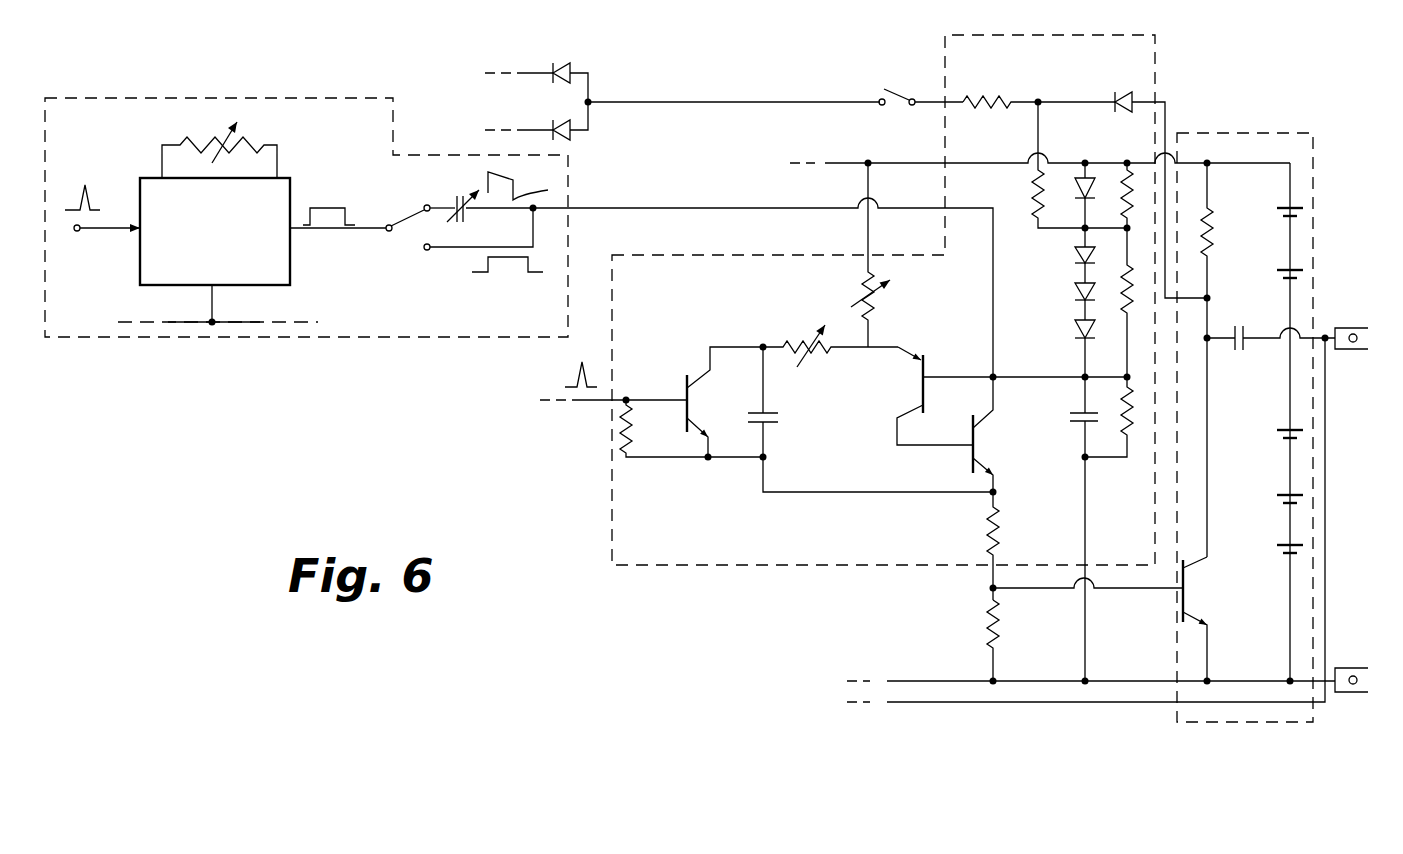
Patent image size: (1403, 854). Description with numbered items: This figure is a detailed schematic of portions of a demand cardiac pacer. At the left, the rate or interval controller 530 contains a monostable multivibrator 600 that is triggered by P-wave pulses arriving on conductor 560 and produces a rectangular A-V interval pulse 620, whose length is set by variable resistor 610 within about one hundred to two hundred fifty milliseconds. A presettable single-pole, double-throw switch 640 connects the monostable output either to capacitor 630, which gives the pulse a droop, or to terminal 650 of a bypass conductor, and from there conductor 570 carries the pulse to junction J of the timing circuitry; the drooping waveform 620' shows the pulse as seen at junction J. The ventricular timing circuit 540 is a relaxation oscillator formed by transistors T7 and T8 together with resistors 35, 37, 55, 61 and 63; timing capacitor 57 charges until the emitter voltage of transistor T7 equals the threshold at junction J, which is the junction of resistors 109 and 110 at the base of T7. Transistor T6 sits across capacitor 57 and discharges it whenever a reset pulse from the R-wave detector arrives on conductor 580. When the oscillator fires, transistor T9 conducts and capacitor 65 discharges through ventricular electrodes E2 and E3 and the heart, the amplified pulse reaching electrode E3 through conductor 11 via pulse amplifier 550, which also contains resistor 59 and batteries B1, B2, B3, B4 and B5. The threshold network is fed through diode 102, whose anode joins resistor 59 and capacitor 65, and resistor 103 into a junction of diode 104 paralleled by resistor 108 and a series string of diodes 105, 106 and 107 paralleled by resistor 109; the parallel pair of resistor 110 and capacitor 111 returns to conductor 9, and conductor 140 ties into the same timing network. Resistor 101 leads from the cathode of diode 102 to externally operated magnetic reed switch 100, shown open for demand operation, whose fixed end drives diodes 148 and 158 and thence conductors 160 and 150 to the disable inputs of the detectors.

The rate or interval controller 530 is at (378, 337).
The monostable multivibrator 600 is at (145, 180).
The variable resistor 610 is at (212, 138).
The conductor 560 is at (100, 235).
The conductor 9 is at (220, 325).
The single pole, double throw switch 640 is at (410, 215).
The A-V interval pulse 620 is at (403, 186).
The terminal 650 is at (427, 250).
The capacitor 630 is at (462, 205).
The waveform 620' is at (551, 178).
The conductor 570 is at (678, 208).
The conductor 150 is at (530, 73).
The conductor 160 is at (530, 130).
The diode 158 is at (572, 65).
The diode 148 is at (572, 132).
The magnetic reed switch 100 is at (893, 88).
The resistor 101 is at (990, 105).
The diode 102 is at (1125, 93).
The resistor 103 is at (1036, 190).
The conductor 140 is at (802, 160).
The diode 104 is at (1090, 170).
The diode 105 is at (1073, 252).
The diode 106 is at (1073, 288).
The diode 107 is at (1073, 325).
The resistor 108 is at (1130, 170).
The resistor 109 is at (1125, 300).
The resistor 110 is at (1125, 405).
The capacitor 111 is at (1068, 413).
The junction J is at (1080, 375).
The ventricular timing circuit 540 is at (735, 567).
The resistor 35 is at (862, 280).
The resistor 37 is at (822, 348).
The transistor T7 is at (903, 352).
The transistor T8 is at (980, 422).
The transistor T6 is at (686, 385).
The conductor 580 is at (582, 402).
The resistor 55 is at (620, 450).
The capacitor 57 is at (778, 418).
The resistor 61 is at (1000, 525).
The resistor 63 is at (988, 628).
The conductor 11 is at (872, 702).
The pulse amplifier 550 is at (1258, 133).
The resistor 59 is at (1210, 240).
The capacitor 65 is at (1240, 328).
The ventricular electrode E3 is at (1348, 328).
The ventricular electrode E2 is at (1348, 668).
The battery B1 is at (1303, 210).
The battery B2 is at (1303, 272).
The battery B3 is at (1277, 432).
The battery B4 is at (1277, 497).
The battery B5 is at (1277, 548).
The transistor T9 is at (1186, 595).